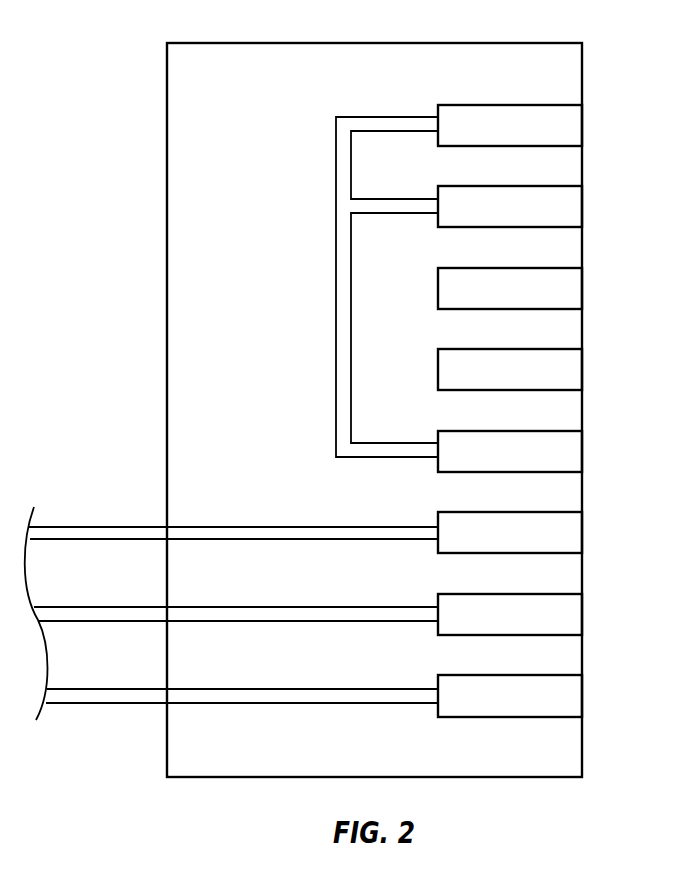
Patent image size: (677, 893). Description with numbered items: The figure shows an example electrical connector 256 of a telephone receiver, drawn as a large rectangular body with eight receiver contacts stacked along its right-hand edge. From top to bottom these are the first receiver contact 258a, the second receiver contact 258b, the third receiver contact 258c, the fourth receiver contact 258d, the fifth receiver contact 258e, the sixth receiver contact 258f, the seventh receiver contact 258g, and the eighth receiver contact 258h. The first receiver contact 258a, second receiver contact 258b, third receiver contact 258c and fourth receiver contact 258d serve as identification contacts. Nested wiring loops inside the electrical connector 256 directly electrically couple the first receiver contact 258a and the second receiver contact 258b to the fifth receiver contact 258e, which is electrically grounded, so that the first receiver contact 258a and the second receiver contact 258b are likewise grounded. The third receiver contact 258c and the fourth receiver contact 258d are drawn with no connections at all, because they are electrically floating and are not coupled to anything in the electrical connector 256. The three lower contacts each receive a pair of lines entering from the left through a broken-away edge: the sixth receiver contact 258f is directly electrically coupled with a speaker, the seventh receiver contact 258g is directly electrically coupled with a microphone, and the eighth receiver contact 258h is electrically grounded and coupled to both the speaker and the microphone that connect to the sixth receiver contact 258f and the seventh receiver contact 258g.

The electrical connector 256 is at (425, 43).
The first receiver contact 258a is at (583, 126).
The second receiver contact 258b is at (583, 207).
The third receiver contact 258c is at (583, 289).
The fourth receiver contact 258d is at (583, 370).
The fifth receiver contact 258e is at (583, 452).
The sixth receiver contact 258f is at (583, 533).
The seventh receiver contact 258g is at (583, 615).
The eighth receiver contact 258h is at (583, 696).